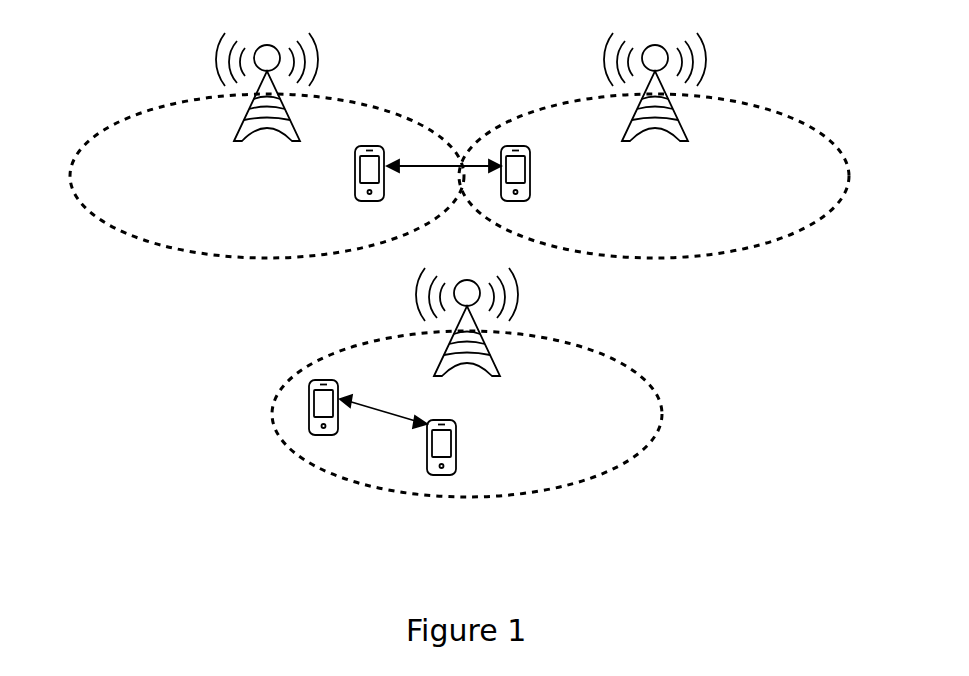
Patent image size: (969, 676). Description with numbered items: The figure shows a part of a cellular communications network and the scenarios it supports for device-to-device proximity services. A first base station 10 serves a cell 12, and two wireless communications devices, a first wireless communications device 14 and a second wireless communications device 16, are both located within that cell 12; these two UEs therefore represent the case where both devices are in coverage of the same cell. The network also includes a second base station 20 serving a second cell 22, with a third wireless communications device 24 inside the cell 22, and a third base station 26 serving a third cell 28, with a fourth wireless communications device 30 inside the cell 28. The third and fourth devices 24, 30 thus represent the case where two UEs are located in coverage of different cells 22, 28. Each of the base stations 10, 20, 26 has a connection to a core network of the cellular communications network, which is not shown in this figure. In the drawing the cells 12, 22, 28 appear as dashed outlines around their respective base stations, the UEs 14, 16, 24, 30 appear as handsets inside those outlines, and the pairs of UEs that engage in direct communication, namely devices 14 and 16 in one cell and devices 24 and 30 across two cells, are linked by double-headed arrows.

The first base station 10 is at (518, 290).
The cell 12 is at (658, 393).
The first wireless communications device 14 is at (320, 377).
The second wireless communications device 16 is at (425, 474).
The second base station 20 is at (212, 48).
The second cell 22 is at (73, 156).
The third wireless communications device 24 is at (375, 143).
The third base station 26 is at (706, 50).
The third cell 28 is at (848, 158).
The fourth wireless communications device 30 is at (512, 143).